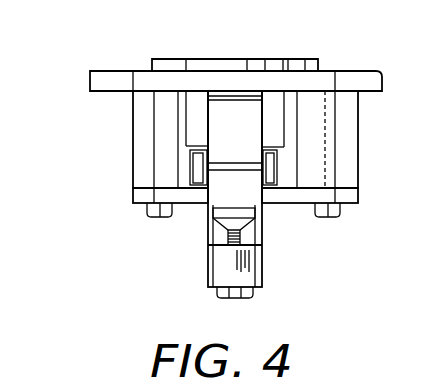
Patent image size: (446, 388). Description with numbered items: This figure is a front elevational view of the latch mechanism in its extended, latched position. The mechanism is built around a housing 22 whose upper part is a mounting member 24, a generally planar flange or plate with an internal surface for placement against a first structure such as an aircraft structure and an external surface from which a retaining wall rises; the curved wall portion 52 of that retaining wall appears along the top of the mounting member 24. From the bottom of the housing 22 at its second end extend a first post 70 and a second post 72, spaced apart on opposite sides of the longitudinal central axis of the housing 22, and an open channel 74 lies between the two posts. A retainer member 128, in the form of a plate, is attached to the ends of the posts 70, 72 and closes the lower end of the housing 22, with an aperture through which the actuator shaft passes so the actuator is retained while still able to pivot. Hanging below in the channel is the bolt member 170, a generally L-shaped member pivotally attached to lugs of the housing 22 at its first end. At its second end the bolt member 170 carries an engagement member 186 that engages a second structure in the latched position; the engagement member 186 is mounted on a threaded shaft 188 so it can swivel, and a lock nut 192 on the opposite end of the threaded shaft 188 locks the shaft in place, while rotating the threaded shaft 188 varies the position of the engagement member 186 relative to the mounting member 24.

The housing 22 is at (120, 121).
The mounting member 24 is at (373, 82).
The curved wall portion 52 is at (220, 66).
The first post 70 is at (150, 170).
The second post 72 is at (351, 155).
The open channel 74 is at (285, 180).
The retainer member 128 is at (355, 193).
The bolt member 170 is at (208, 262).
The engagement member 186 is at (207, 226).
The threaded shaft 188 is at (262, 238).
The lock nut 192 is at (250, 298).